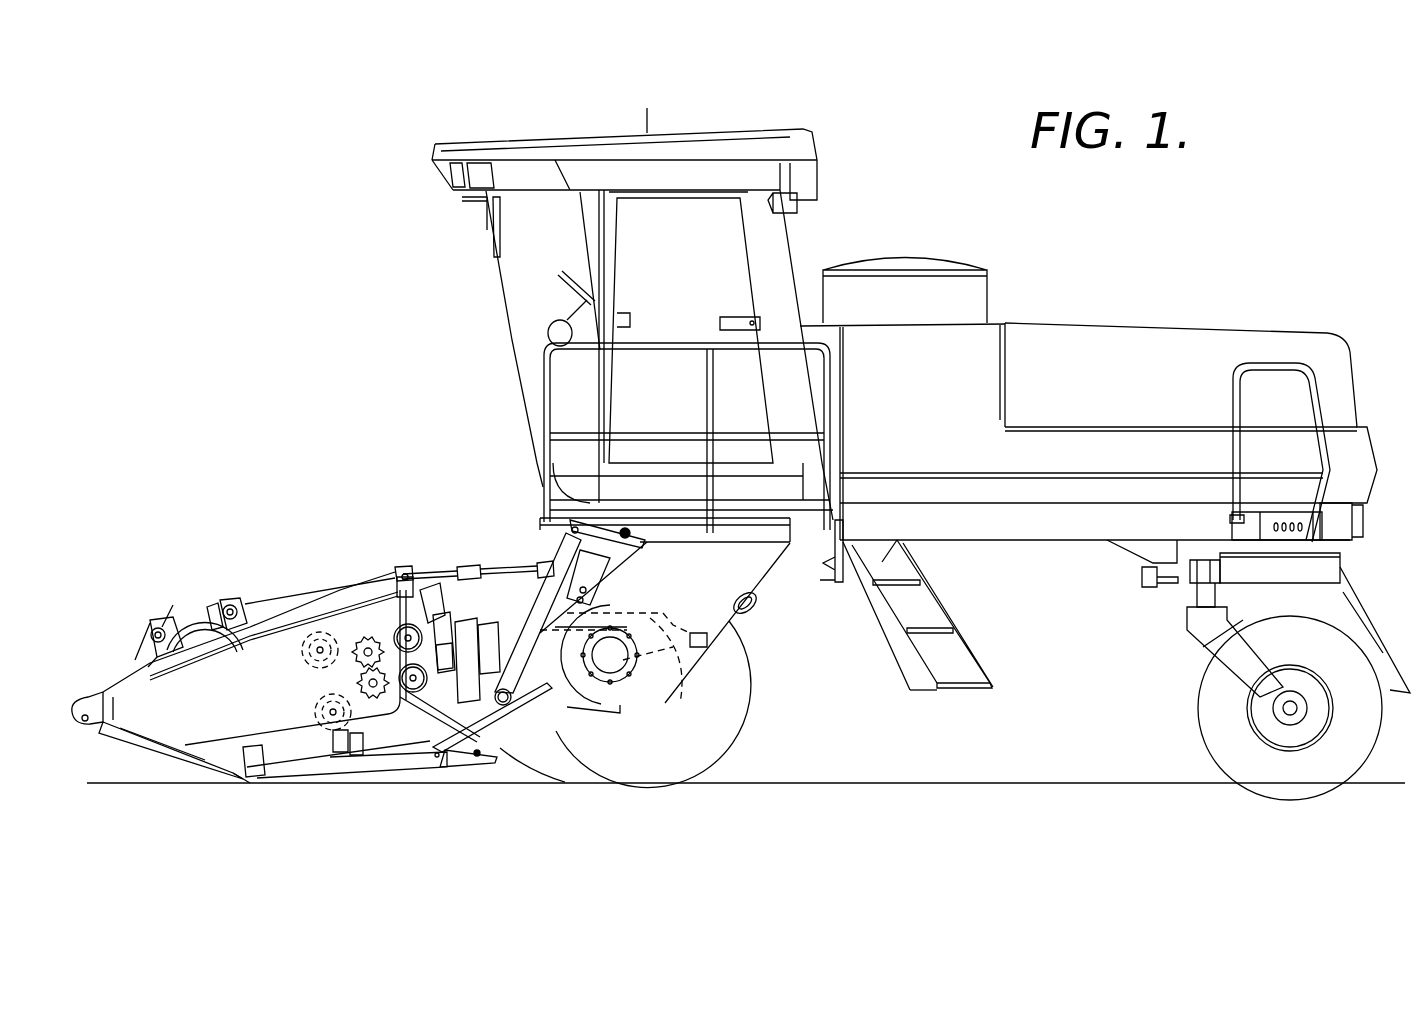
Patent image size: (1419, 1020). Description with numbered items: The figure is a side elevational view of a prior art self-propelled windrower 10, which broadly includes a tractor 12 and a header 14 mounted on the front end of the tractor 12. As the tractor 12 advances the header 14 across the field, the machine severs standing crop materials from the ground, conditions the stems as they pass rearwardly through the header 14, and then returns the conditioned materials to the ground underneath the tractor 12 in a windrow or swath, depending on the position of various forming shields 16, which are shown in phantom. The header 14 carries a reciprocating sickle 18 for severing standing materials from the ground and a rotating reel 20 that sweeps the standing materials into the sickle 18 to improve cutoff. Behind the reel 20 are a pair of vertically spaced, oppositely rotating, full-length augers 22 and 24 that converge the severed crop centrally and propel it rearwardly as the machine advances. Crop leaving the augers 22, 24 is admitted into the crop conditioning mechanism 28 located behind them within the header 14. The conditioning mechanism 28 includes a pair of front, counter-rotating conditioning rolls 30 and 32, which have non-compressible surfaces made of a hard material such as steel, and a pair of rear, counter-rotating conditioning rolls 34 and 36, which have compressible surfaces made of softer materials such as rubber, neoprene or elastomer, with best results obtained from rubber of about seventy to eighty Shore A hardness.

The self-propelled windrower 10 is at (805, 97).
The tractor 12 is at (1170, 325).
The header 14 is at (260, 587).
The forming shields 16 is at (681, 704).
The reciprocating sickle 18 is at (260, 783).
The rotating reel 20 is at (167, 622).
The auger 22 is at (302, 655).
The auger 24 is at (315, 713).
The crop conditioning mechanism 28 is at (382, 620).
The front conditioning roll 30 is at (357, 633).
The front conditioning roll 32 is at (353, 683).
The rear conditioning roll 34 is at (437, 617).
The rear conditioning roll 36 is at (430, 710).